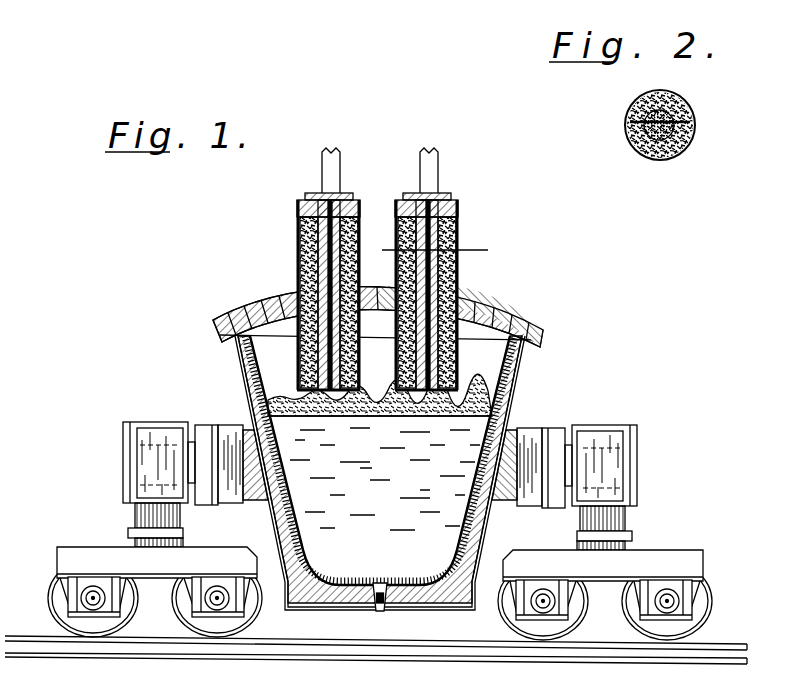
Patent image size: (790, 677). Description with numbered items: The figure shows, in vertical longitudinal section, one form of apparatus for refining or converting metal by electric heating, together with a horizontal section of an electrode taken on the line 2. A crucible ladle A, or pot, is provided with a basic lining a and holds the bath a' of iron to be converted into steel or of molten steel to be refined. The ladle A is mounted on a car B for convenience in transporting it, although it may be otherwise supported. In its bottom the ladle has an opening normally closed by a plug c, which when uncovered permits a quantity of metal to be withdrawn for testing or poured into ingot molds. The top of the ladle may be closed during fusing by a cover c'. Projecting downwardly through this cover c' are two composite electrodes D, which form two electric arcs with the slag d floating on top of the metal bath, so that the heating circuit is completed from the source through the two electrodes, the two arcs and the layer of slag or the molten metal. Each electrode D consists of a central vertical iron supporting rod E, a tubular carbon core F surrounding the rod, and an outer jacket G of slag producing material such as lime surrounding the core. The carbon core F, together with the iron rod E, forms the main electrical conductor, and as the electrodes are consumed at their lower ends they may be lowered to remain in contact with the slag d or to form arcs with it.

In FIG. 1, the crucible ladle A is at (235, 405).
In FIG. 1, the car B is at (628, 533).
In FIG. 1, the basic lining a is at (380, 469).
In FIG. 1, the bath a' is at (380, 473).
In FIG. 1, the plug c is at (387, 580).
In FIG. 1, the cover c' is at (378, 311).
In FIG. 1, the slag d is at (387, 405).
In FIG. 1, the composite electrode D is at (322, 246).
In FIG. 1, the supporting rod E is at (302, 199).
In FIG. 2, the supporting rod E is at (693, 122).
In FIG. 1, the tubular core F is at (280, 266).
In FIG. 2, the tubular core F is at (630, 122).
In FIG. 1, the jacket G is at (300, 283).
In FIG. 2, the jacket G is at (655, 158).
In FIG. 1, the section line 2 is at (435, 251).